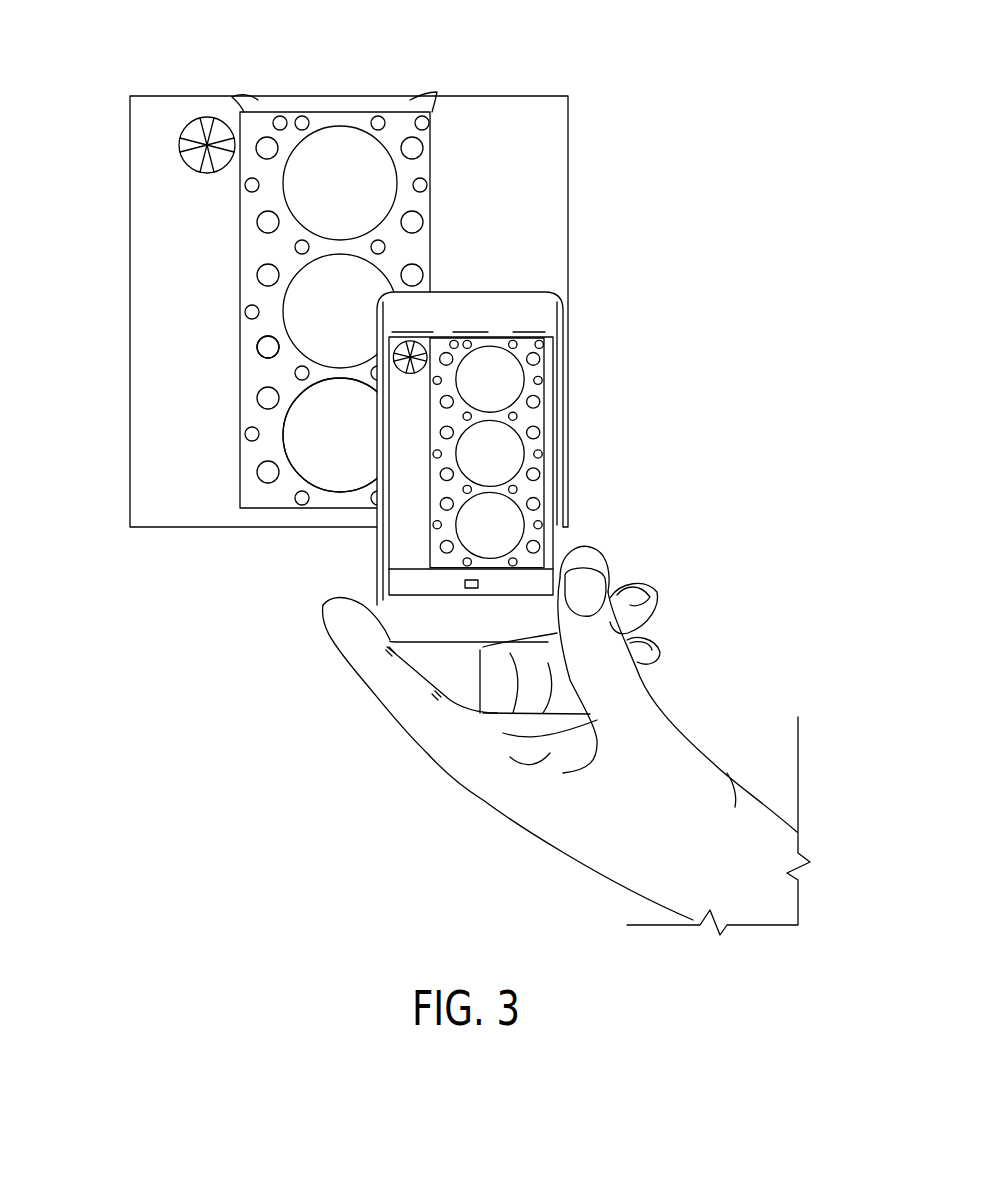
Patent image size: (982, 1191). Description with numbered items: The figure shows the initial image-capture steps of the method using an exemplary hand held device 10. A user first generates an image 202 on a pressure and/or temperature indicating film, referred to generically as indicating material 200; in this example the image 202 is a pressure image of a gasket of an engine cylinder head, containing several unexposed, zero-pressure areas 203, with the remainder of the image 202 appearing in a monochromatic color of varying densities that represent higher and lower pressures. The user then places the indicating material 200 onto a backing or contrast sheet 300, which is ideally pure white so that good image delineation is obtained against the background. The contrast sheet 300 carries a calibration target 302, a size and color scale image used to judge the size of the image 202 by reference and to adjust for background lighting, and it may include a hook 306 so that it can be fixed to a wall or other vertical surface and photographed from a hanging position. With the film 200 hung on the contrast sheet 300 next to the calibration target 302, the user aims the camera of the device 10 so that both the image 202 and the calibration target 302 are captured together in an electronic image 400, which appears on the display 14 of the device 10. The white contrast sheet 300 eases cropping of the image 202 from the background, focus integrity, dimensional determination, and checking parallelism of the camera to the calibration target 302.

The contrast sheet 300 is at (543, 158).
The calibration target 302 is at (187, 140).
The hook 306 is at (236, 96).
The indicating material 200 is at (242, 243).
The image 202 is at (257, 343).
The unexposed areas 203 is at (297, 427).
The device 10 is at (547, 307).
The display 14 is at (398, 537).
The electronic image 400 is at (540, 408).